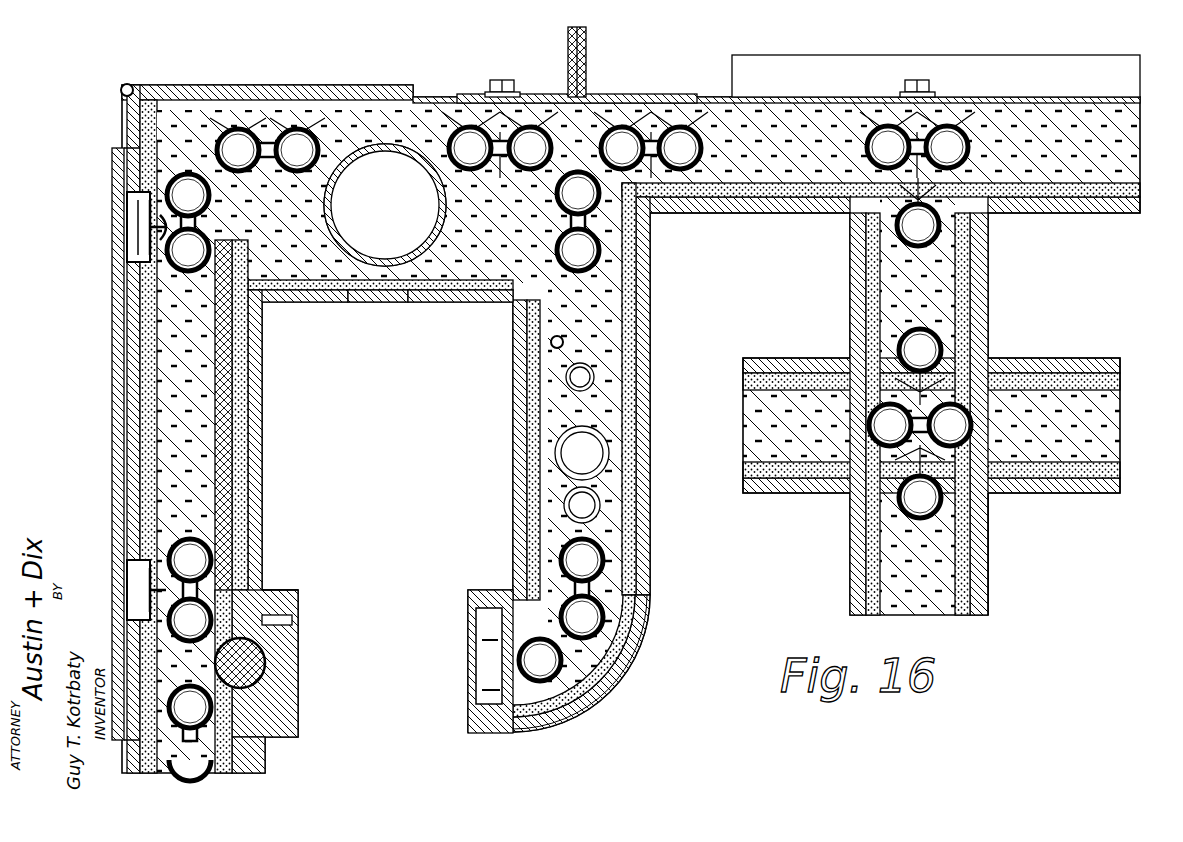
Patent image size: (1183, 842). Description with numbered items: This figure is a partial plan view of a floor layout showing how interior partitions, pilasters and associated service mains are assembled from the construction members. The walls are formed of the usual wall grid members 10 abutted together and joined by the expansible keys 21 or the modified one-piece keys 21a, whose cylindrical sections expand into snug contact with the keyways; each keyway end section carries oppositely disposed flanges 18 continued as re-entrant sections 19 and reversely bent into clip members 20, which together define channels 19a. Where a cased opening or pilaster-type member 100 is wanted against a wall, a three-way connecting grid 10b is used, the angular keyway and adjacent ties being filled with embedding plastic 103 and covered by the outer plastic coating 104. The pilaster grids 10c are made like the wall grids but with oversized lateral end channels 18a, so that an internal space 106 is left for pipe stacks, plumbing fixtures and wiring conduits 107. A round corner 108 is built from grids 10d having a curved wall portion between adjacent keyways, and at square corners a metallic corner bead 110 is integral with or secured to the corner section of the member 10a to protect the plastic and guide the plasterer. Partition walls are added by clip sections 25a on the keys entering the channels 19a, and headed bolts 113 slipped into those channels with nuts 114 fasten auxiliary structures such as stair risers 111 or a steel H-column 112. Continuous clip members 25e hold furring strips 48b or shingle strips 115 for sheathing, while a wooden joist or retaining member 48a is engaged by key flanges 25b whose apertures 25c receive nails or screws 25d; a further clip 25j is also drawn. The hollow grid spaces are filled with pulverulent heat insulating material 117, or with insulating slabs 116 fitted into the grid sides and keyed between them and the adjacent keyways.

The wall grid member 10 is at (795, 180).
The corner section member 10a is at (203, 128).
The three-way connecting grid 10b is at (265, 592).
The pilaster grid 10c is at (417, 302).
The round-corner grid 10d is at (602, 672).
The flange 18 is at (496, 302).
The oversized lateral end channel 18a is at (358, 302).
The re-entrant section 19 is at (895, 462).
The channel 19a is at (537, 110).
The clip member 20 is at (1033, 554).
The key member 21 is at (905, 225).
The modified key member 21a is at (300, 128).
The clip section 25a is at (992, 212).
The flange 25b is at (490, 690).
The aperture 25c is at (150, 592).
The nail or screw 25d is at (462, 650).
The clip member 25e is at (130, 218).
The clip 25j is at (122, 182).
The wooden support or joist 48a is at (145, 572).
The furring strip 48b is at (130, 228).
The cased opening 100 is at (298, 678).
The embedding plastic 103 is at (285, 620).
The outer plastic coating 104 is at (292, 648).
The internal space 106 is at (350, 302).
The service conduit 107 is at (660, 460).
The round corner assembly 108 is at (625, 642).
The metallic corner bead 110 is at (124, 86).
The stair riser 111 is at (785, 72).
The H-column 112 is at (567, 62).
The headed bolt 113 is at (500, 79).
The nut 114 is at (487, 93).
The shingle strip 115 is at (107, 384).
The insulating slab 116 is at (222, 480).
The heat insulating material 117 is at (255, 385).